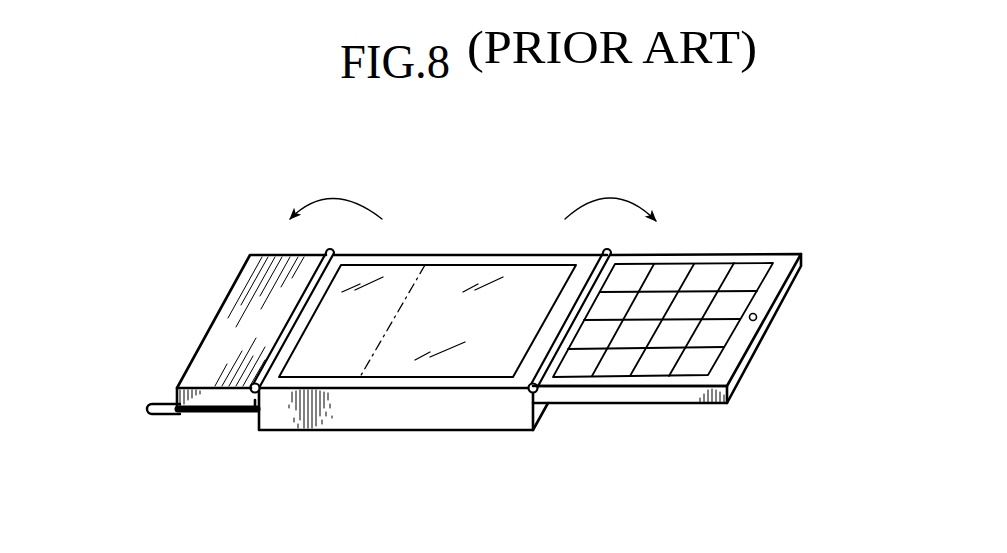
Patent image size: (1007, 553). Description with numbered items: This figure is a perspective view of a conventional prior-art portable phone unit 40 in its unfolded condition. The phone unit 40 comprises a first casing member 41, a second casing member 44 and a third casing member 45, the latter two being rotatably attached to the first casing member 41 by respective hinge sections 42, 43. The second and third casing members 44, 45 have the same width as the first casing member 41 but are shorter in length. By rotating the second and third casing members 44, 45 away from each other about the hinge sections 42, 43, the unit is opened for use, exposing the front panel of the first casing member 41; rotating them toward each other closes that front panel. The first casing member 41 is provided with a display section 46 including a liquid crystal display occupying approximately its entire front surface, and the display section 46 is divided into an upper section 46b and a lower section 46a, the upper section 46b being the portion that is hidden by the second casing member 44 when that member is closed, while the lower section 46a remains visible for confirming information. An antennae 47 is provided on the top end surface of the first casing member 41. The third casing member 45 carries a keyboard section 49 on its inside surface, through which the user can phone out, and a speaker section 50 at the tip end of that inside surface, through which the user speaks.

The phone unit 40 is at (631, 165).
The first casing member 41 is at (400, 417).
The hinge section 42 is at (331, 252).
The hinge section 43 is at (609, 252).
The second casing member 44 is at (223, 402).
The third casing member 45 is at (642, 398).
The display section 46 is at (463, 252).
The lower section of the display section 46a is at (482, 275).
The upper section of the display section 46b is at (397, 287).
The antennae 47 is at (164, 405).
The keyboard section 49 is at (677, 272).
The speaker section 50 is at (758, 315).